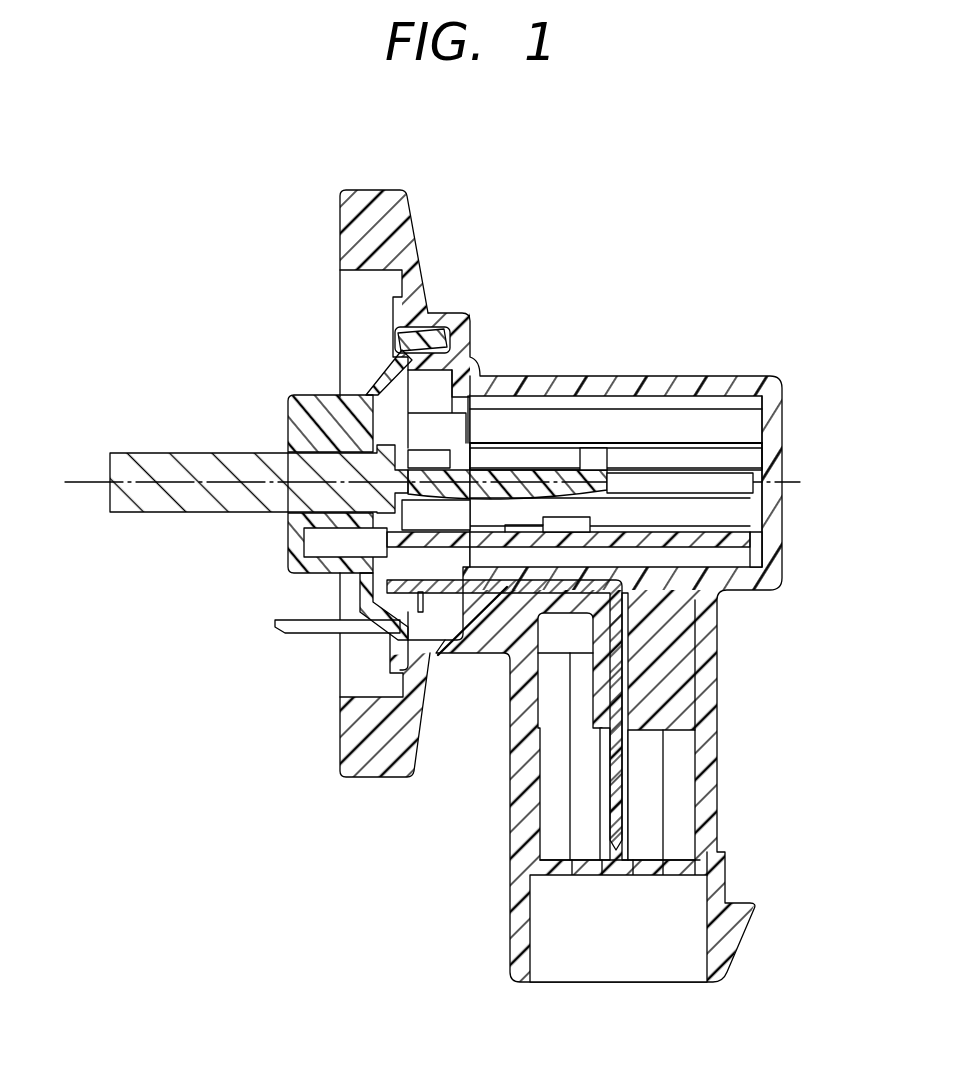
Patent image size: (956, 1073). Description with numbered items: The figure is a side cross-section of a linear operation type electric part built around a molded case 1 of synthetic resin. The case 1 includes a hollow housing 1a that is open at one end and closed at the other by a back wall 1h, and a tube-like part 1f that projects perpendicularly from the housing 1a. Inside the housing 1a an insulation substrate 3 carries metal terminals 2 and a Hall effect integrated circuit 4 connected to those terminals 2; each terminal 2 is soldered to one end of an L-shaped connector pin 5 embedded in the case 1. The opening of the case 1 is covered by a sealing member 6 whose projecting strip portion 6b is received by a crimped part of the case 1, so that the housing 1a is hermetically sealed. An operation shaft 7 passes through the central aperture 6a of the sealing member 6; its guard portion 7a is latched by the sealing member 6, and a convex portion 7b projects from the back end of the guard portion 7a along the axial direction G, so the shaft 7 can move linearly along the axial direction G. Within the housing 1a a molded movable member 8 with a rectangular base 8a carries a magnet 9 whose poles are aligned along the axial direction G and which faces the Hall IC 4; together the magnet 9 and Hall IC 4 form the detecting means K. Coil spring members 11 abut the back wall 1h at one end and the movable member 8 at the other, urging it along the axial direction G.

The molded case 1 is at (410, 192).
The hollow housing 1a is at (737, 413).
The tube-like part 1f is at (717, 775).
The back wall 1h is at (773, 420).
The metal terminal 2 is at (432, 655).
The insulation substrate 3 is at (708, 540).
The Hall effect integrated circuit 4 is at (580, 527).
The L-shaped connector pin 5 is at (612, 796).
The sealing member 6 is at (300, 393).
The aperture 6a is at (283, 455).
The projecting strip portion 6b is at (447, 318).
The operation shaft 7 is at (153, 507).
The guard portion 7a is at (372, 396).
The convex portion 7b is at (290, 543).
The movable member 8 is at (548, 462).
The rectangular base 8a is at (598, 450).
The magnet 9 is at (494, 490).
The coil spring member 11 is at (748, 480).
The axial direction G is at (423, 516).
The detecting means K is at (500, 518).